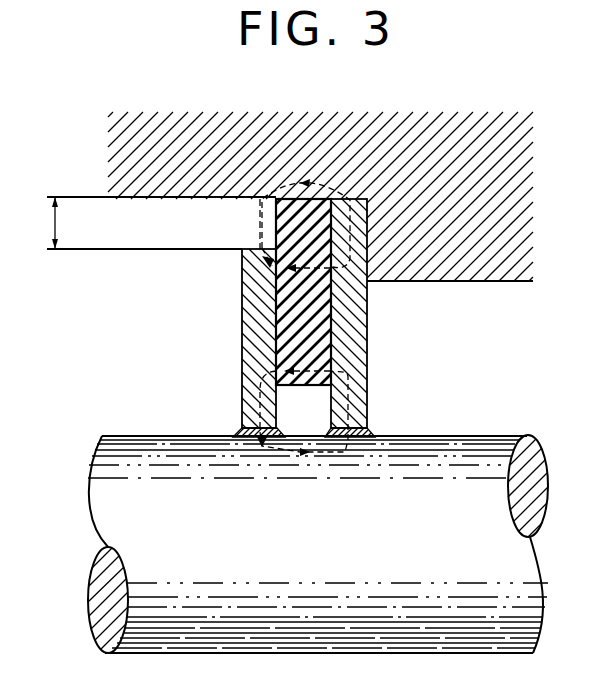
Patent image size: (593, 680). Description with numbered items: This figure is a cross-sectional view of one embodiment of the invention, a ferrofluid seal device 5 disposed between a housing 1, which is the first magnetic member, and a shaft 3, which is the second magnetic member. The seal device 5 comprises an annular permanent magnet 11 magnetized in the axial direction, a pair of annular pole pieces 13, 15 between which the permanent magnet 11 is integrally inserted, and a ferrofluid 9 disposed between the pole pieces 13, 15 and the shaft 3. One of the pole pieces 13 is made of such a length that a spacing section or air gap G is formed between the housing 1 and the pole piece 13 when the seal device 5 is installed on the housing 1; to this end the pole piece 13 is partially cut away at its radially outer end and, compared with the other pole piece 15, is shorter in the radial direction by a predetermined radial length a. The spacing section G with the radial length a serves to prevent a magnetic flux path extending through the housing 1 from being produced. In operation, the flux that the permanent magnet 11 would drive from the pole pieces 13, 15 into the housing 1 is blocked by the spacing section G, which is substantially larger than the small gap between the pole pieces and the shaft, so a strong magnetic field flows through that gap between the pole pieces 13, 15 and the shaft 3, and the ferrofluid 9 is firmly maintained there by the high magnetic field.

The housing 1 is at (525, 170).
The shaft 3 is at (494, 435).
The ferrofluid seal device 5 is at (308, 317).
The ferrofluid 9 is at (365, 432).
The annular permanent magnet 11 is at (275, 284).
The pole piece 13 is at (250, 344).
The pole piece 15 is at (360, 368).
The predetermined radial length a is at (42, 223).
The spacing section or air gap G is at (250, 229).